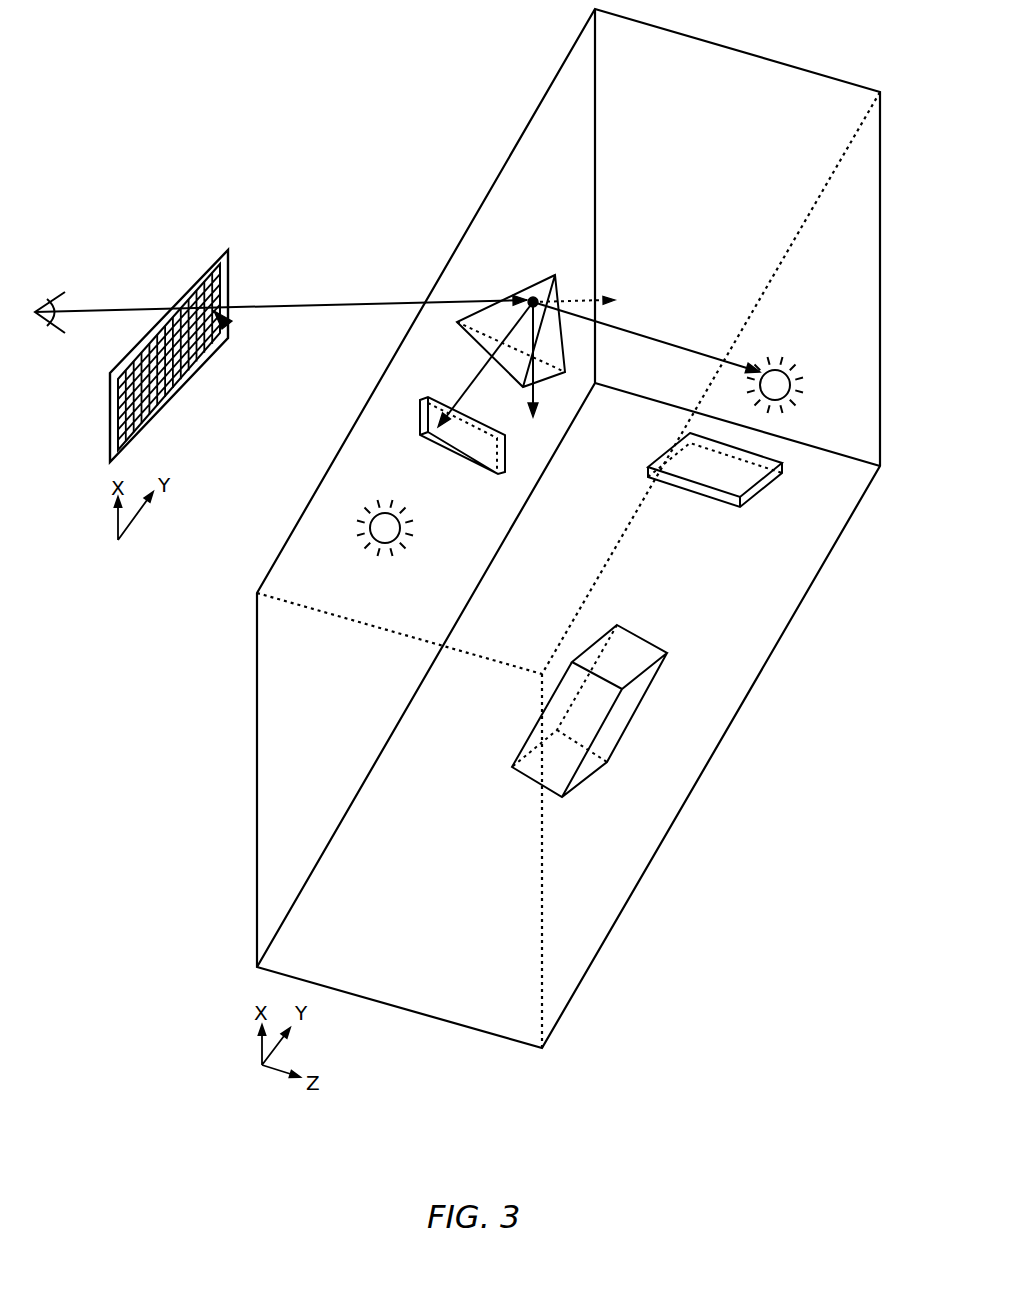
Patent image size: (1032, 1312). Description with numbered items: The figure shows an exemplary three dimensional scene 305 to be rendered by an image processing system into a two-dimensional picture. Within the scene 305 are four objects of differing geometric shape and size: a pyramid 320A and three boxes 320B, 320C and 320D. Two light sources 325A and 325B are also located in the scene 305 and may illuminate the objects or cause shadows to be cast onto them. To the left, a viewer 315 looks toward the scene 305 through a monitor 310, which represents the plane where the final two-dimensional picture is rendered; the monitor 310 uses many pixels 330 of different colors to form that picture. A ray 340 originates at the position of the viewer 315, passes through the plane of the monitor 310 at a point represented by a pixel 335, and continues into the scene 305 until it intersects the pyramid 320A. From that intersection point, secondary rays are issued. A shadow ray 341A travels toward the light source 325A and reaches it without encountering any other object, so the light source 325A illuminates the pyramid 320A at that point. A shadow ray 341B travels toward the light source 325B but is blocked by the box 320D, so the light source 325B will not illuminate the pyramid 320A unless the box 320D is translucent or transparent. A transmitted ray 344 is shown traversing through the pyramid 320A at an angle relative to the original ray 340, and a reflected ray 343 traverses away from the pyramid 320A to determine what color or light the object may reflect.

The three dimensional scene 305 is at (508, 1058).
The monitor 310 is at (228, 284).
The viewer 315 is at (46, 298).
The pyramid 320A is at (548, 277).
The box 320B is at (700, 503).
The box 320C is at (513, 766).
The box 320D is at (457, 457).
The light source 325A is at (787, 370).
The light source 325B is at (367, 538).
The pixels 330 is at (110, 431).
The pixel 335 is at (228, 326).
The ray 340 is at (351, 303).
The shadow ray 341A is at (645, 333).
The shadow ray 341B is at (482, 370).
The reflected ray 343 is at (540, 398).
The transmitted ray 344 is at (600, 298).